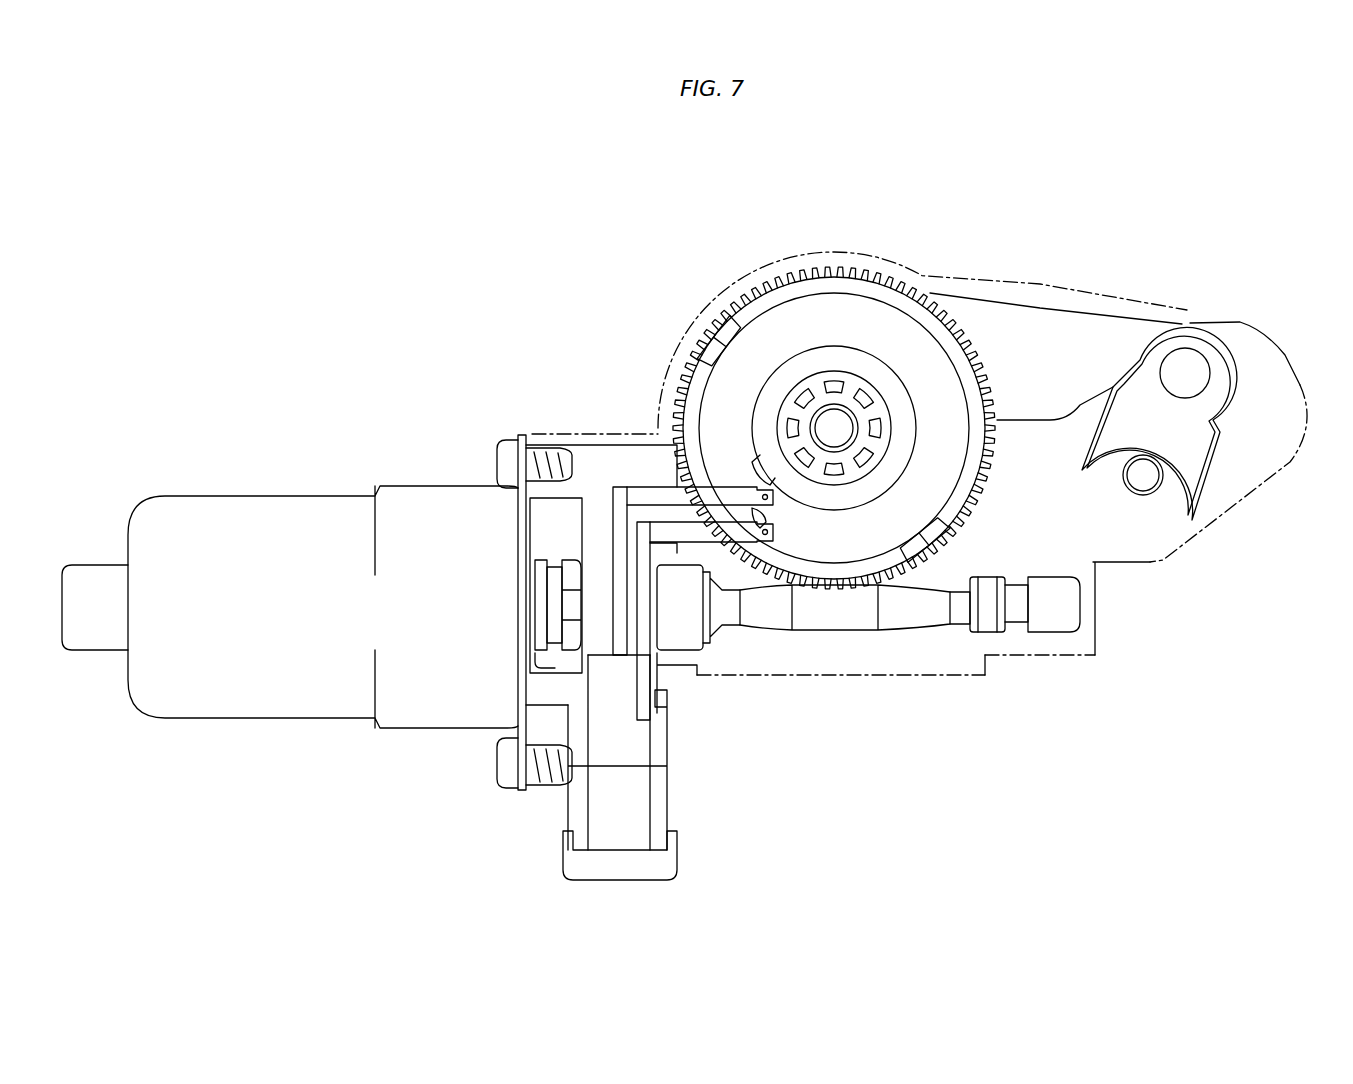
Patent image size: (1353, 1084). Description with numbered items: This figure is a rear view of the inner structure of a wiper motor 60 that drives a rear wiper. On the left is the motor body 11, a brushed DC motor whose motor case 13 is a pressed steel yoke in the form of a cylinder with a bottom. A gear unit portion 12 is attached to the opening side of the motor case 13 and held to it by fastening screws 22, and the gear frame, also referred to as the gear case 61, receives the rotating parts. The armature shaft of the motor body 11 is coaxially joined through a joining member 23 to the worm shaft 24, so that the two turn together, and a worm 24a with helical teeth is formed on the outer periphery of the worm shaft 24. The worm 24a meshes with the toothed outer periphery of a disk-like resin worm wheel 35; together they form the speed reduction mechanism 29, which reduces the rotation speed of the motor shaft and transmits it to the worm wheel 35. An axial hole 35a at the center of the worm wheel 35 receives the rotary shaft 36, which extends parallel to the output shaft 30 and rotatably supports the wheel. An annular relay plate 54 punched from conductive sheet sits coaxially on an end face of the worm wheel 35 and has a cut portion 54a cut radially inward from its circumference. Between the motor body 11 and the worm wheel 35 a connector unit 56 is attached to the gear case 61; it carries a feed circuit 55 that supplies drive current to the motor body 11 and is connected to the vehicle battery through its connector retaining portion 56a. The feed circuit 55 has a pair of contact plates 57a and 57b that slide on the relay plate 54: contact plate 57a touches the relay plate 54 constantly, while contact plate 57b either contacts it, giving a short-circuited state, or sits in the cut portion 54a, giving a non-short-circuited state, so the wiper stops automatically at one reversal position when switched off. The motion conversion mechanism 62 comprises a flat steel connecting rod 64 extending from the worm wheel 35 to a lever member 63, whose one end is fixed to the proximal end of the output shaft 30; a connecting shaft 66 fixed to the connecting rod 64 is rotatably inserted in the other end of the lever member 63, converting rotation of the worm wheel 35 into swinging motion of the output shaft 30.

The motor body 11 is at (213, 488).
The gear unit portion 12 is at (1050, 256).
The motor case 13 is at (203, 700).
The fastening screws 22 is at (497, 463).
The joining member 23 is at (577, 598).
The worm shaft 24 is at (752, 616).
The worm 24a is at (835, 618).
The speed reduction mechanism 29 is at (960, 566).
The output shaft 30 is at (1143, 475).
The worm wheel 35 is at (929, 282).
The axial hole 35a is at (840, 430).
The rotary shaft 36 is at (862, 395).
The relay plate 54 is at (873, 525).
The cut portion 54a is at (748, 540).
The feed circuit 55 is at (606, 532).
The connector unit 56 is at (680, 803).
The connector retaining portion 56a is at (611, 868).
The contact plate 57a is at (708, 498).
The contact plate 57b is at (750, 533).
The wiper motor 60 is at (410, 294).
The gear case 61 is at (968, 690).
The motion conversion mechanism 62 is at (1110, 302).
The lever member 63 is at (1190, 440).
The connecting rod 64 is at (998, 322).
The connecting shaft 66 is at (1185, 372).